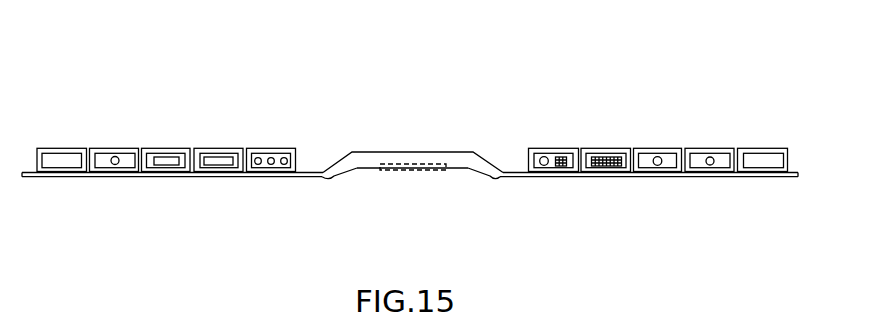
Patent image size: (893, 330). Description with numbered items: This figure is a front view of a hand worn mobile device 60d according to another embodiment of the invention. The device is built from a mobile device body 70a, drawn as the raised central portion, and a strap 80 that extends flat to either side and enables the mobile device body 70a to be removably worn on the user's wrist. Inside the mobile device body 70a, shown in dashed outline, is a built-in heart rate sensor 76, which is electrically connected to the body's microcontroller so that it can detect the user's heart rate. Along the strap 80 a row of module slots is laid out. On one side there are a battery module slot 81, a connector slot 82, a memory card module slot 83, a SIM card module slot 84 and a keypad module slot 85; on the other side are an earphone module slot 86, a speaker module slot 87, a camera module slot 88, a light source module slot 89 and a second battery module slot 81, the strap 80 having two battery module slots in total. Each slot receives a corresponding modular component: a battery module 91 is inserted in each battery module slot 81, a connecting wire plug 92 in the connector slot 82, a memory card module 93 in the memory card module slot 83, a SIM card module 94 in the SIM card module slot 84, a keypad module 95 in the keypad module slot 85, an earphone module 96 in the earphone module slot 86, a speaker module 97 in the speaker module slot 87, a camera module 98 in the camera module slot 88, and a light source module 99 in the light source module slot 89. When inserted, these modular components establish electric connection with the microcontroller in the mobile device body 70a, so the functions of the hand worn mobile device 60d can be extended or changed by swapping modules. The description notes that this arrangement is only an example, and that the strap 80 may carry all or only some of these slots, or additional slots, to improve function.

The hand worn mobile device 60d is at (412, 114).
The mobile device body 70a is at (397, 158).
The heart rate sensor 76 is at (410, 172).
The strap 80 is at (140, 177).
The battery module slot 81 is at (50, 148).
The connector slot 82 is at (103, 148).
The memory card module slot 83 is at (155, 148).
The SIM card module slot 84 is at (207, 148).
The keypad module slot 85 is at (263, 148).
The earphone module slot 86 is at (543, 148).
The speaker module slot 87 is at (593, 148).
The camera module slot 88 is at (648, 148).
The light source module slot 89 is at (700, 148).
The battery module 91 is at (60, 163).
The connecting wire plug 92 is at (107, 166).
The memory card module 93 is at (183, 166).
The SIM card module 94 is at (233, 166).
The keypad module 95 is at (279, 166).
The earphone module 96 is at (557, 166).
The speaker module 97 is at (622, 166).
The camera module 98 is at (672, 166).
The light source module 99 is at (697, 166).